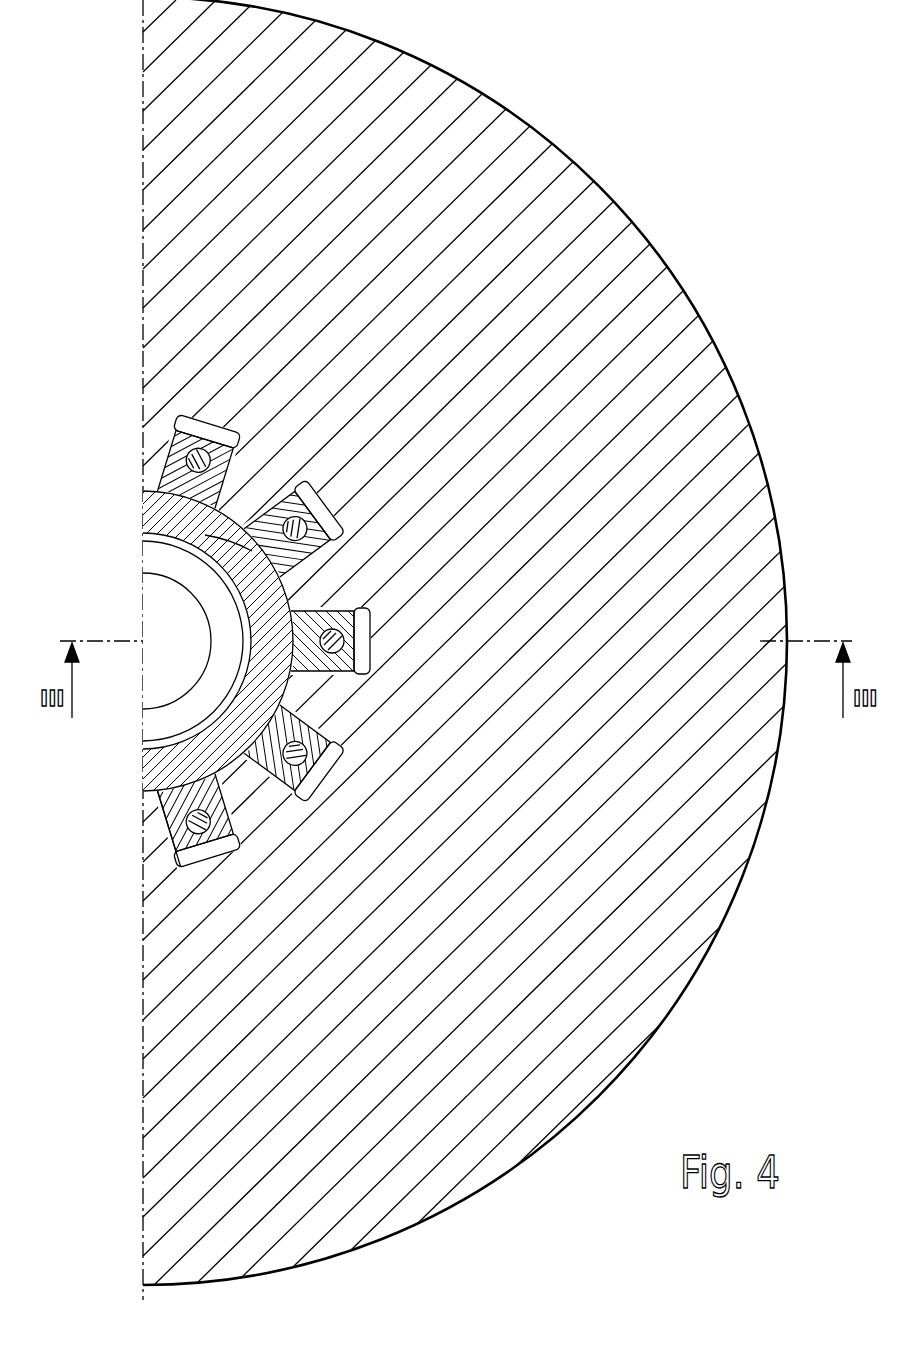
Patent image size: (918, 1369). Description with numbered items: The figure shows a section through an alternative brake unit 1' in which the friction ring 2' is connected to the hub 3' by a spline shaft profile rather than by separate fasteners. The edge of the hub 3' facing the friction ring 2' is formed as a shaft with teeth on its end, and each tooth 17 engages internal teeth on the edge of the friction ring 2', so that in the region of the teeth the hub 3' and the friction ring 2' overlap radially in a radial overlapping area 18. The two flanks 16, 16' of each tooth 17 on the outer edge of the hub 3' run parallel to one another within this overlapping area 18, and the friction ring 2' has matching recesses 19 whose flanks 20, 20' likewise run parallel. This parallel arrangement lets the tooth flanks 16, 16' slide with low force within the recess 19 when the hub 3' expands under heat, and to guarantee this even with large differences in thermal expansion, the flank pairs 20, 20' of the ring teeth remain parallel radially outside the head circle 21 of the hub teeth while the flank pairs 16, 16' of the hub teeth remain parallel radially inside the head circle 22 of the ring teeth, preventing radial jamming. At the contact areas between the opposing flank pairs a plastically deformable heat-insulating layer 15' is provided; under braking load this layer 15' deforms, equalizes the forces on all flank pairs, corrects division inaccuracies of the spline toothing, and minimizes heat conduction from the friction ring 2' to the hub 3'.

The brake unit 1' is at (465, 642).
The friction ring 2' is at (465, 642).
The hub 3' is at (146, 641).
The heat-insulating layer 15' is at (259, 640).
The tooth flank 16 is at (164, 463).
The tooth flank 16' is at (230, 531).
The tooth 17 is at (175, 823).
The radial overlapping area 18 is at (173, 833).
The recess 19 is at (193, 853).
The flank of recess 20 is at (141, 431).
The flank of recess 20' is at (191, 522).
The head circle of hub teeth 21 is at (185, 432).
The head circle of friction ring teeth 22 is at (235, 505).